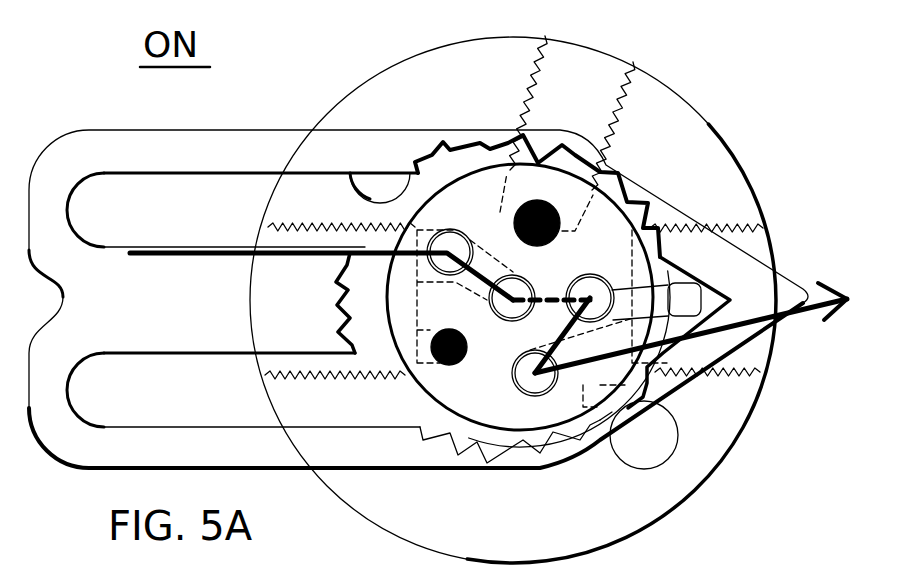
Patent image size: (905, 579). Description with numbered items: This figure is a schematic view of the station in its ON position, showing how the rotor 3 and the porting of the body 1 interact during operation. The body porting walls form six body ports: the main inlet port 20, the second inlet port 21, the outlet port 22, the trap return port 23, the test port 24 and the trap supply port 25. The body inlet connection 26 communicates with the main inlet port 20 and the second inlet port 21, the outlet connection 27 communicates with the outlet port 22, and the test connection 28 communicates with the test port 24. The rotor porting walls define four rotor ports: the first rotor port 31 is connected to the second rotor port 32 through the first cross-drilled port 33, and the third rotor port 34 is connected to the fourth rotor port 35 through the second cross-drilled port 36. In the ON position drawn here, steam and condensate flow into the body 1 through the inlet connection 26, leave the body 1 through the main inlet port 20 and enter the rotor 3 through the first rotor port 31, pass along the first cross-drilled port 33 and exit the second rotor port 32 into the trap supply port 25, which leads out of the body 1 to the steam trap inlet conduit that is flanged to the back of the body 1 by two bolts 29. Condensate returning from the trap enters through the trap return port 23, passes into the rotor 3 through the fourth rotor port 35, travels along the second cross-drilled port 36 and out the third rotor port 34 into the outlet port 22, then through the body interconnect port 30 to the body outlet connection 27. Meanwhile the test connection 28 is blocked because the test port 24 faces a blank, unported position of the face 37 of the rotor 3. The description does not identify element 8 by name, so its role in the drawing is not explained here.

The body 1 is at (350, 120).
The rotor 3 is at (612, 205).
The guide slot 8 is at (237, 440).
The main inlet port 20 is at (422, 262).
The second inlet port 21 is at (452, 366).
The outlet port 22 is at (523, 397).
The trap return port 23 is at (613, 292).
The test port 24 is at (545, 200).
The trap supply port 25 is at (530, 285).
The body inlet connection 26 is at (296, 365).
The outlet connection 27 is at (738, 376).
The test connection 28 is at (560, 66).
The bolts 29 is at (368, 188).
The body interconnect port 30 is at (588, 405).
The first rotor port 31 is at (455, 228).
The second rotor port 32 is at (487, 300).
The first cross-drilled port 33 is at (495, 258).
The third rotor port 34 is at (537, 397).
The fourth rotor port 35 is at (560, 292).
The second cross-drilled port 36 is at (635, 431).
The face 37 is at (600, 230).